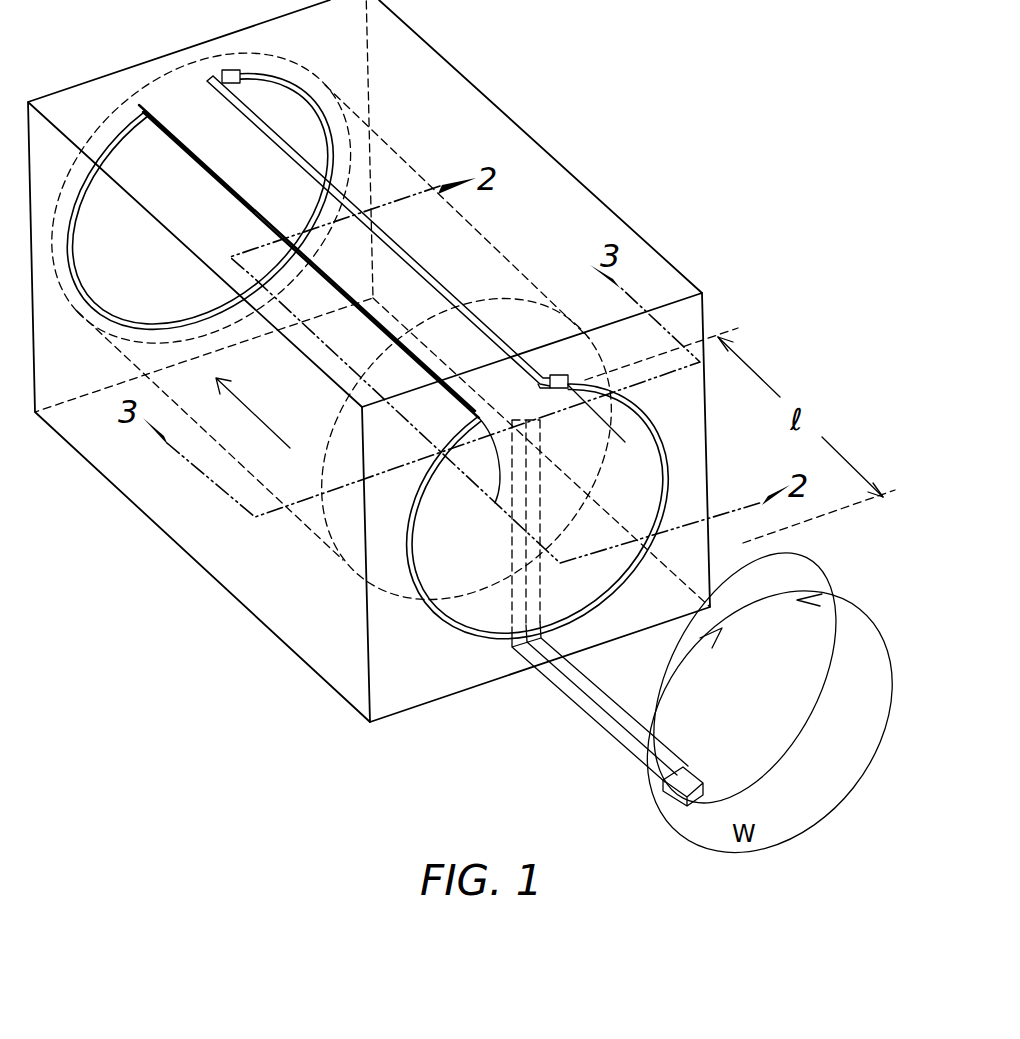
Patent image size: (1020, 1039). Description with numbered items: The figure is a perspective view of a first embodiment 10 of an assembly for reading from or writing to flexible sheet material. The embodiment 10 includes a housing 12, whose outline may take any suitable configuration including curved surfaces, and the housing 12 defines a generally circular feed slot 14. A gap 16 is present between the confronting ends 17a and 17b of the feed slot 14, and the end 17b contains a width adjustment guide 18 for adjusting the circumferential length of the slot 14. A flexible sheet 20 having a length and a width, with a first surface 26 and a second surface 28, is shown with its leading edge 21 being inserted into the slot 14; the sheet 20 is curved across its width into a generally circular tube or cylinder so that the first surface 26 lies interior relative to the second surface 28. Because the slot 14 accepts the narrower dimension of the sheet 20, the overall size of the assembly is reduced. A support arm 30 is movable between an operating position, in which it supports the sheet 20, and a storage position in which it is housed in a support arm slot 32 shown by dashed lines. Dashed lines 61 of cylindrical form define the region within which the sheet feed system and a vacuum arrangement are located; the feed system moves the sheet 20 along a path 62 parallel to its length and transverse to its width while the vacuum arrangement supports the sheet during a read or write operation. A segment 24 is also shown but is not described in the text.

The first embodiment 10 is at (434, 361).
The housing 12 is at (437, 53).
The feed slot 14 is at (437, 617).
The gap 16 is at (462, 340).
The end of feed slot 17a is at (497, 500).
The end of feed slot 17b is at (538, 375).
The width adjustment guide 18 is at (229, 70).
The sheet 20 is at (820, 588).
The leading edge 21 is at (418, 474).
The loop segment 24 is at (416, 594).
The first surface 26 is at (760, 722).
The second surface 28 is at (740, 543).
The support arm 30 is at (572, 700).
The support arm slot 32 is at (513, 567).
The dashed lines defining cylindrical region 61 is at (310, 553).
The path 62 is at (250, 411).